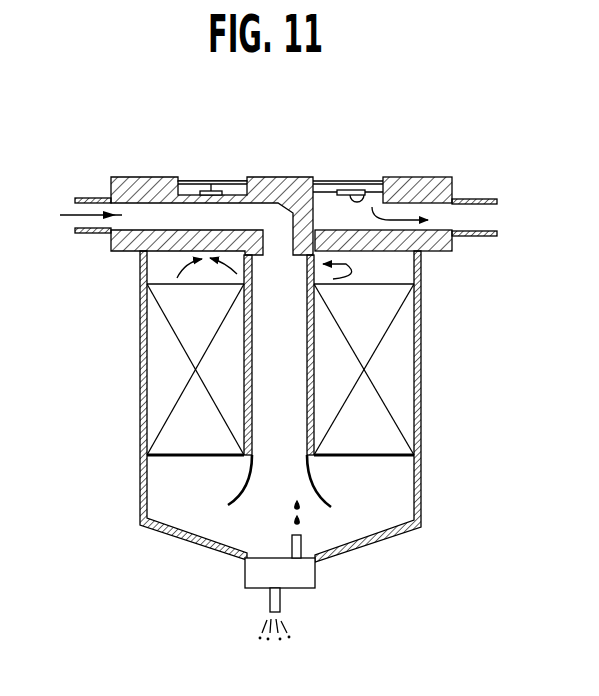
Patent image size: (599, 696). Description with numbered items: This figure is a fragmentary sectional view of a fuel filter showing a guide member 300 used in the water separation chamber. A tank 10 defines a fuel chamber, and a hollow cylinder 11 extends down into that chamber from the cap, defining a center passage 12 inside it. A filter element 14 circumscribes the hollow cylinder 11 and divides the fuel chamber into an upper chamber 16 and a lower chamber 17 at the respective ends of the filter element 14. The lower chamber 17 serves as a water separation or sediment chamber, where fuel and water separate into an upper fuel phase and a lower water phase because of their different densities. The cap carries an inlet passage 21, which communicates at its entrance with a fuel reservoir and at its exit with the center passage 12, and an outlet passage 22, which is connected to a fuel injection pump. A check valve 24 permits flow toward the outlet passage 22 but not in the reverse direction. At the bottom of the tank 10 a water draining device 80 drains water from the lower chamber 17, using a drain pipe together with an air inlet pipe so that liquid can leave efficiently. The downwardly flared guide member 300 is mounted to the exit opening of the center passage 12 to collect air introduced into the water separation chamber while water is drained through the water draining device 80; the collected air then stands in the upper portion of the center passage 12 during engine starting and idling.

The tank 10 is at (310, 421).
The hollow cylinder 11 is at (307, 381).
The center passage 12 is at (257, 386).
The filter element 14 is at (398, 390).
The upper chamber 16 is at (153, 273).
The lower chamber 17 is at (358, 534).
The inlet passage 21 is at (118, 223).
The outlet passage 22 is at (450, 218).
The check valve 24 is at (362, 197).
The water draining device 80 is at (293, 592).
The guide member 300 is at (325, 496).